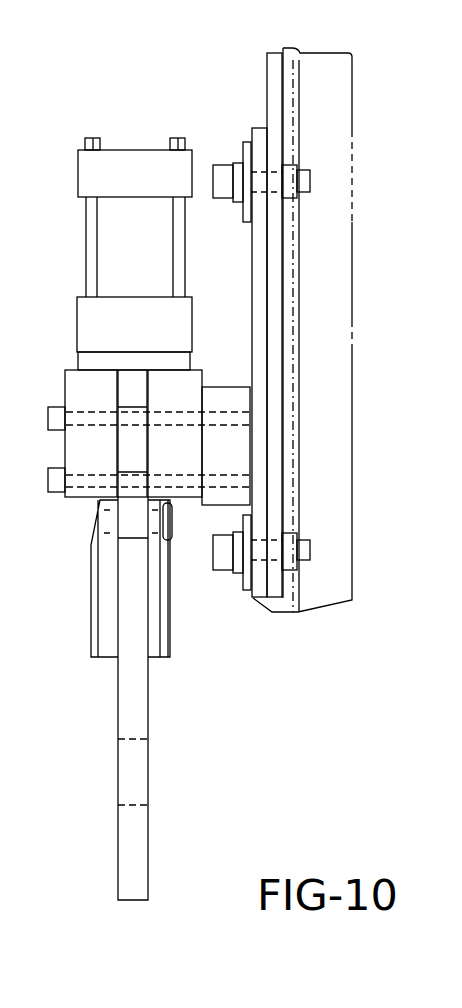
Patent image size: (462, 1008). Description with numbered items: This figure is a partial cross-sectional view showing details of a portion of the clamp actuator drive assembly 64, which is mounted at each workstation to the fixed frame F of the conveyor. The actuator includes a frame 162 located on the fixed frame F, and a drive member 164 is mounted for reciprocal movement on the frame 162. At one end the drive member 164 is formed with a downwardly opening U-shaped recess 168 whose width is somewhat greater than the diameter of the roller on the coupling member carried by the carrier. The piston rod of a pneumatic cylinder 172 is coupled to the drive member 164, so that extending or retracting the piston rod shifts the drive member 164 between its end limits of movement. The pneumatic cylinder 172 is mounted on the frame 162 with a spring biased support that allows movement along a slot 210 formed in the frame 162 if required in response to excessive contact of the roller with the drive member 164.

The pneumatic cylinder 172 is at (118, 150).
The frame 162 is at (253, 128).
The slot 210 is at (262, 188).
The fixed frame F is at (352, 330).
The clamp actuator drive assembly 64 is at (245, 635).
The drive member 164 is at (148, 718).
The U-shaped recess 168 is at (125, 807).